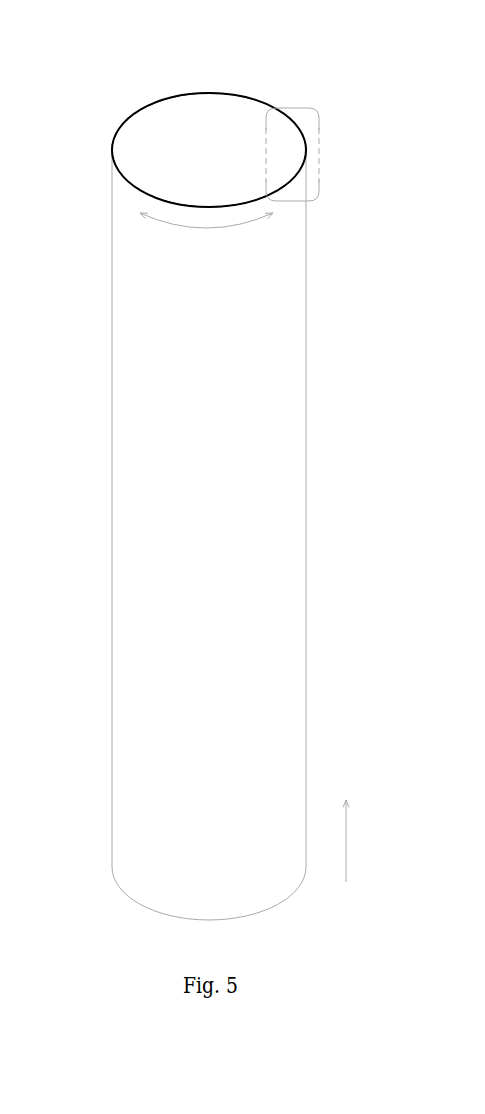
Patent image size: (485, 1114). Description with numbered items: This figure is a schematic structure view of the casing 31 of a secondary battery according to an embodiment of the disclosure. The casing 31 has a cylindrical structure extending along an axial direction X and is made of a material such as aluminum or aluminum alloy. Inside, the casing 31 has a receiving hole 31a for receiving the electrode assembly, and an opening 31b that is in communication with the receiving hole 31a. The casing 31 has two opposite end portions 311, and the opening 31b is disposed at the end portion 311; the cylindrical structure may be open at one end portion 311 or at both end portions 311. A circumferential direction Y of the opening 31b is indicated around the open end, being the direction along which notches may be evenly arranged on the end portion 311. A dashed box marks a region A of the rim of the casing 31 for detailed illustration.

The casing 31 is at (218, 43).
The end portion 311 is at (97, 168).
The receiving hole 31a is at (183, 158).
The opening 31b is at (235, 115).
The enlarged detail region A is at (320, 157).
The circumferential direction Y is at (206, 234).
The axial direction X is at (359, 841).